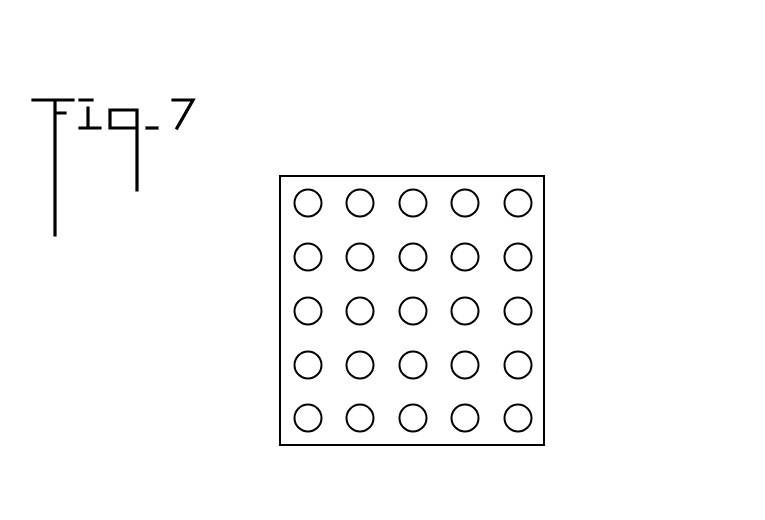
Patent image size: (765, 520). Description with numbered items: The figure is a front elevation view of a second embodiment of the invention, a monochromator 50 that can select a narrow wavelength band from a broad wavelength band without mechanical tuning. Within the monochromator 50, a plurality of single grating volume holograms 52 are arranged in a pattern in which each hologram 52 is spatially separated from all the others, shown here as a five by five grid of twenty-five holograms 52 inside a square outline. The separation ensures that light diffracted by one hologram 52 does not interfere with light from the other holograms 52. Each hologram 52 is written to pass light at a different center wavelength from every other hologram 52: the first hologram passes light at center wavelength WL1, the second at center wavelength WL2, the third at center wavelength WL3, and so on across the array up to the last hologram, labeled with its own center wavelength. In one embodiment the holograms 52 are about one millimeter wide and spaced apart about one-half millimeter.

The monochromator 50 is at (592, 94).
The single grating volume hologram 52 is at (295, 255).
The center wavelength of hologram 1 WL1 is at (311, 201).
The center wavelength of hologram 2 WL2 is at (362, 202).
The center wavelength of hologram 3 WL3 is at (416, 205).